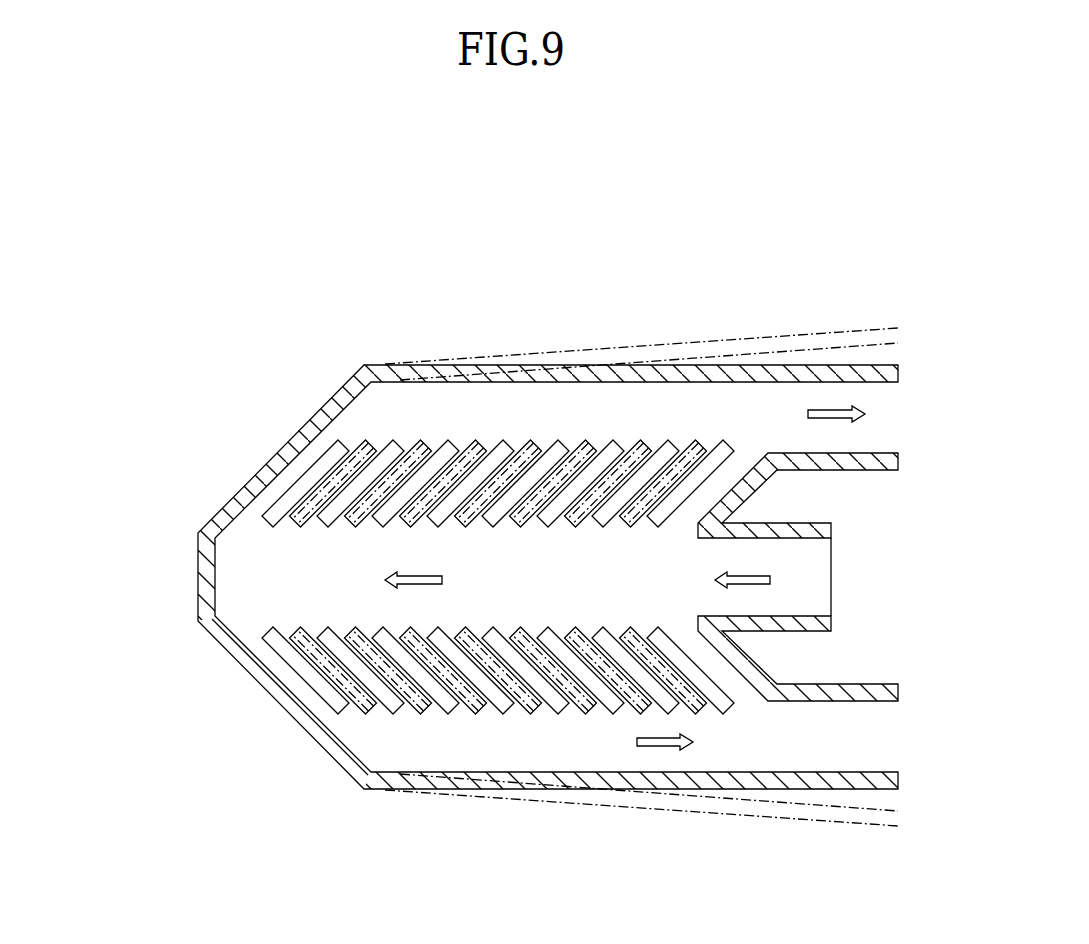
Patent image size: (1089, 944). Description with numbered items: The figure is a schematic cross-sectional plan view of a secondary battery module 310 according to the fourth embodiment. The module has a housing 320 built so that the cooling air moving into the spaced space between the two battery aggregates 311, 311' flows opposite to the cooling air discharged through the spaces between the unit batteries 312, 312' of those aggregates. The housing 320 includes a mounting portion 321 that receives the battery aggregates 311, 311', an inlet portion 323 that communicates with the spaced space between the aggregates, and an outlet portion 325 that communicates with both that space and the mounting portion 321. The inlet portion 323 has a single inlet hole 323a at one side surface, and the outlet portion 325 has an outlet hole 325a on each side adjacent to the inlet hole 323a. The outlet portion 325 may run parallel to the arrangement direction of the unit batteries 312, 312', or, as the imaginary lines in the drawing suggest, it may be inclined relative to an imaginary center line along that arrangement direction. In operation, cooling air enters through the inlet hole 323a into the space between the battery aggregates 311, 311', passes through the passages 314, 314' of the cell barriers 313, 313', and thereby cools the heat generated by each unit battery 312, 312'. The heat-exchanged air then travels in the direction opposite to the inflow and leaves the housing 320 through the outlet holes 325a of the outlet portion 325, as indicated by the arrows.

The secondary battery module 310 is at (707, 207).
The battery aggregate 311 is at (498, 394).
The battery aggregate 311' is at (457, 774).
The unit battery 312 is at (415, 416).
The unit battery 312' is at (264, 691).
The cell barrier 313 is at (559, 412).
The cell barrier 313' is at (333, 776).
The passage 314 is at (557, 413).
The passage 314' is at (309, 774).
The housing 320 is at (186, 564).
The mounting portion 321 is at (382, 787).
The inlet portion 323 is at (813, 623).
The inlet hole 323a is at (830, 550).
The outlet portion 325 is at (807, 375).
The outlet hole 325a is at (898, 386).